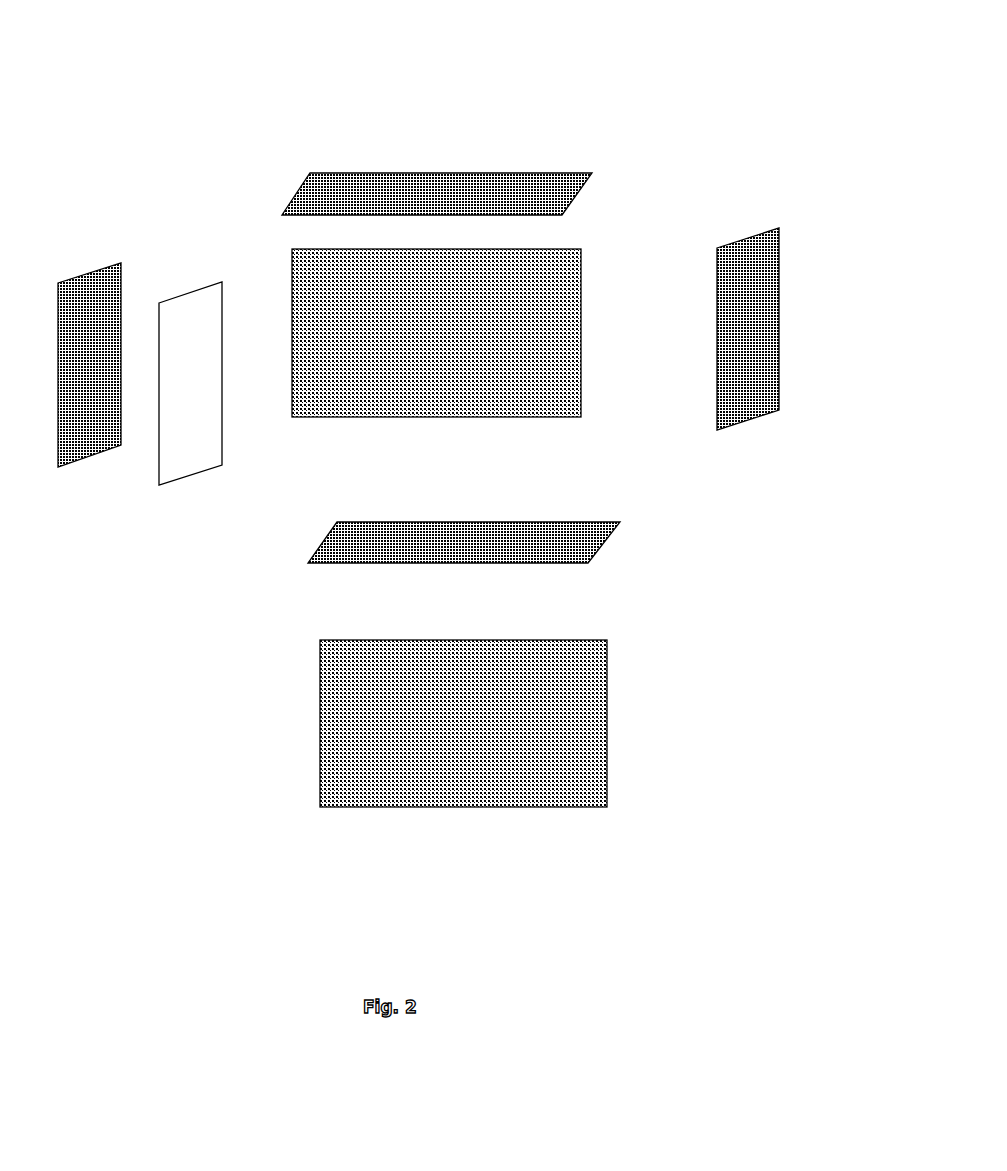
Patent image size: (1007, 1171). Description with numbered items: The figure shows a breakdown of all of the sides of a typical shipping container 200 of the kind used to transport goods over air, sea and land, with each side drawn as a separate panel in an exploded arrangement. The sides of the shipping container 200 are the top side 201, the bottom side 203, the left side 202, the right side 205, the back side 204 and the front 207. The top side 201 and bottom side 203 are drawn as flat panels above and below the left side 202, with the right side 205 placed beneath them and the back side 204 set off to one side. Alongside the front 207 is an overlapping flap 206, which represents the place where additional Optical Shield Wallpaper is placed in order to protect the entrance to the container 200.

The shipping container 200 is at (544, 50).
The top side 201 is at (576, 147).
The left side 202 is at (582, 245).
The bottom side 203 is at (615, 505).
The back side 204 is at (784, 246).
The right side 205 is at (603, 640).
The overlapping flap 206 is at (190, 287).
The front 207 is at (105, 268).